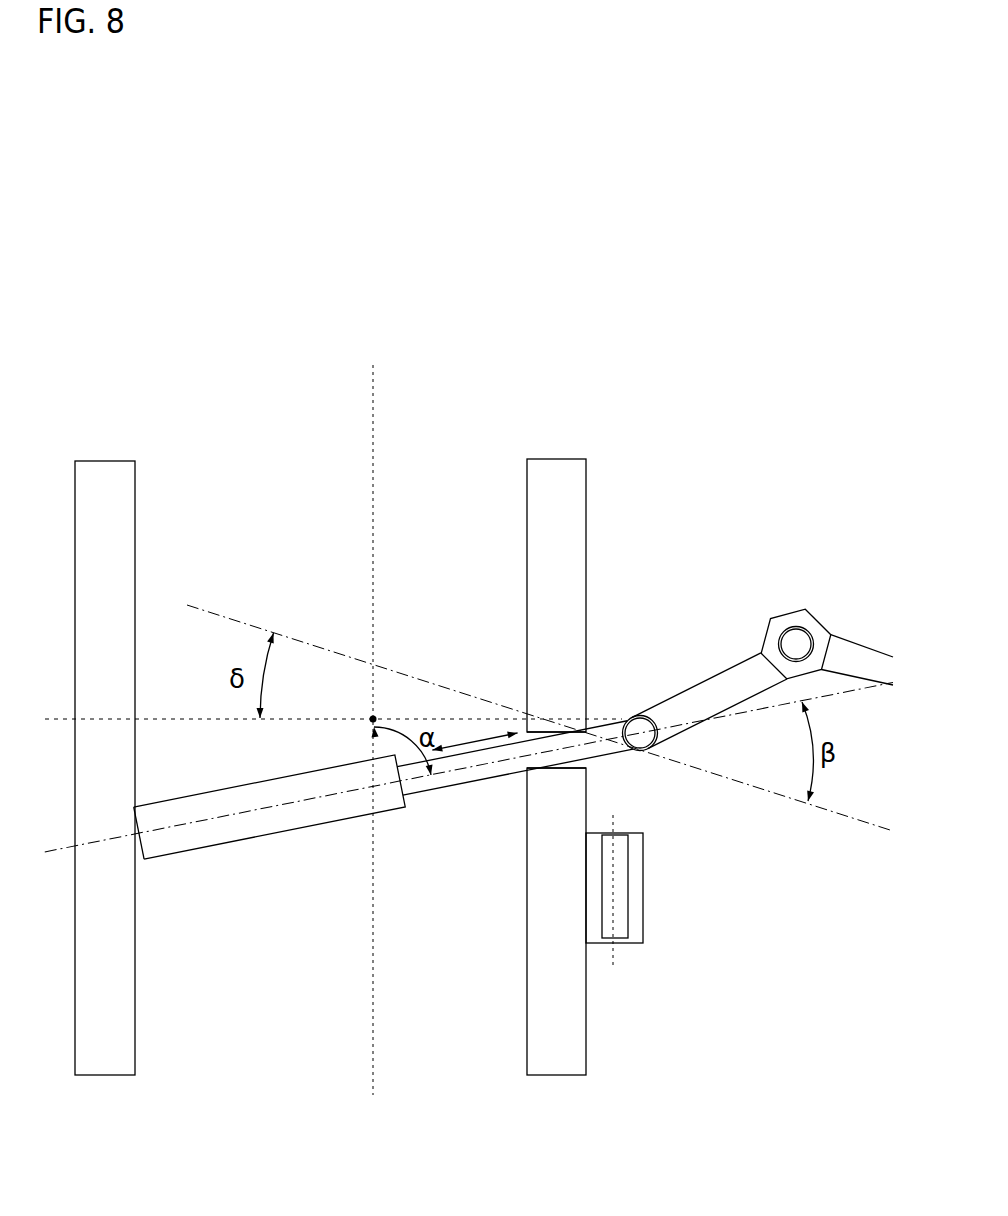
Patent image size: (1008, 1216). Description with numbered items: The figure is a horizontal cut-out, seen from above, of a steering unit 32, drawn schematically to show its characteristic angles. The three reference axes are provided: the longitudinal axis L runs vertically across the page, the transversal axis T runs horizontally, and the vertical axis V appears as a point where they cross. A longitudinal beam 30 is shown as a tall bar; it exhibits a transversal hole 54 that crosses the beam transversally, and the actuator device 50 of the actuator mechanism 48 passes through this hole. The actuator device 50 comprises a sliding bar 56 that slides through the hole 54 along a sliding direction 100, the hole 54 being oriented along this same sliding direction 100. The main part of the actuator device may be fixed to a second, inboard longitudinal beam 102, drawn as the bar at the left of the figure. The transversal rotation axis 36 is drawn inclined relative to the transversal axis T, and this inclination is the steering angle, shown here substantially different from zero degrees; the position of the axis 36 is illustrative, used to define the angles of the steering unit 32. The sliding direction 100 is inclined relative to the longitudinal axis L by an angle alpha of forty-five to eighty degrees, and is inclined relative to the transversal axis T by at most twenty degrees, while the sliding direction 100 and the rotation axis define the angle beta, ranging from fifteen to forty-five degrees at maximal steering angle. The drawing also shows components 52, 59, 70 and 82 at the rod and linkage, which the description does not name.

The longitudinal beam 30 is at (540, 606).
The steering unit 32 is at (540, 399).
The transversal rotation axis 36 is at (314, 644).
The actuator mechanism 48 is at (758, 773).
The actuator device 50 is at (468, 819).
The pivot joint 52 is at (698, 693).
The transversal hole 54 is at (588, 724).
The sliding bar 56 is at (515, 758).
The rod housing 59 is at (270, 807).
The pivot bearing 70 is at (788, 630).
The lever arm 82 is at (873, 657).
The sliding direction 100 is at (139, 833).
The second longitudinal beam 102 is at (117, 1043).
The longitudinal axis L is at (373, 472).
The transversal axis T is at (168, 717).
The vertical axis V is at (369, 722).